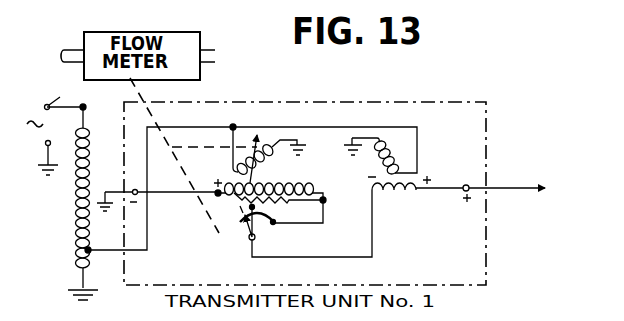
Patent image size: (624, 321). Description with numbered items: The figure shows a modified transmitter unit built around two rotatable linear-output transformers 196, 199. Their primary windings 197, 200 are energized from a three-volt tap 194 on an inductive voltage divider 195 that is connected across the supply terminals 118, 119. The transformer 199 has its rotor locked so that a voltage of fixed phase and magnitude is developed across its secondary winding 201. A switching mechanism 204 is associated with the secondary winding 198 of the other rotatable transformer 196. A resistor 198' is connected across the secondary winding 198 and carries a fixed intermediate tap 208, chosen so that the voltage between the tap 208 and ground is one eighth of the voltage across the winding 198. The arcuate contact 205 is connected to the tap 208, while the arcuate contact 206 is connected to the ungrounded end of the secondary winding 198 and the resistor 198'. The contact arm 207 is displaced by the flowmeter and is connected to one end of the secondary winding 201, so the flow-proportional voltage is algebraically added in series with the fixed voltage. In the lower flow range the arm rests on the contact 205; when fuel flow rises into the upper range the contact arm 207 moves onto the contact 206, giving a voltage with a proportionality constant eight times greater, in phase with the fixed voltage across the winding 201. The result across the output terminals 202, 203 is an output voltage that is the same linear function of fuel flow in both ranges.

The supply terminal 118 is at (66, 96).
The supply terminal 119 is at (50, 141).
The inductive voltage divider 195 is at (75, 188).
The 3 volt tap 194 is at (89, 253).
The output terminal 202 is at (142, 195).
The primary winding 197 is at (265, 146).
The rotatable linear-output transformer 196 is at (290, 170).
The secondary winding 198 is at (272, 183).
The resistor 198' is at (296, 209).
The rotatable linear-output transformer 199 is at (375, 160).
The primary winding 200 is at (386, 147).
The secondary winding 201 is at (456, 201).
The output terminal 203 is at (465, 185).
The switching mechanism 204 is at (236, 239).
The arcuate contact 205 is at (237, 215).
The arcuate contact 206 is at (274, 223).
The contact arm 207 is at (256, 241).
The fixed intermediate tap 208 is at (247, 209).